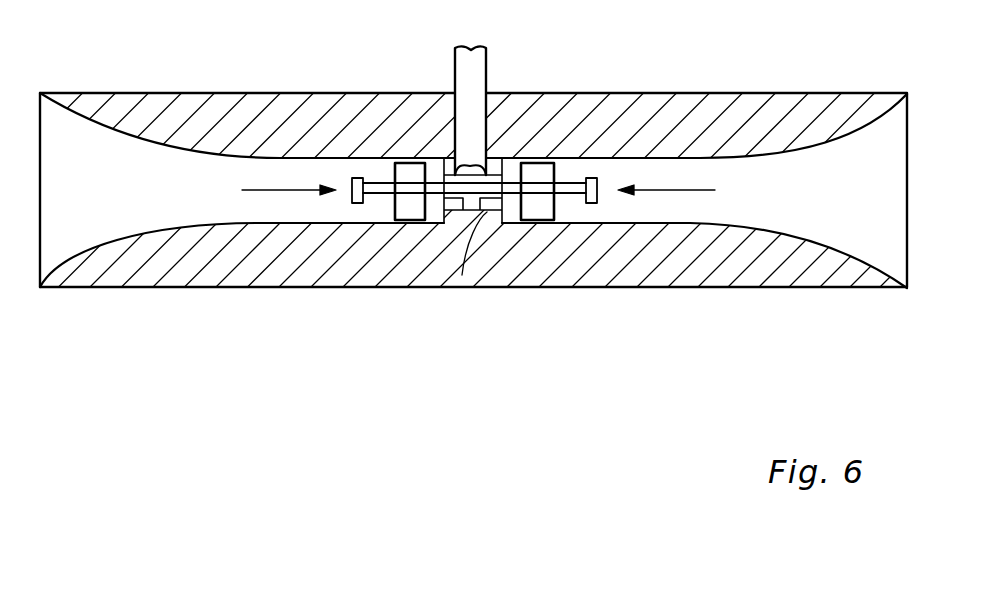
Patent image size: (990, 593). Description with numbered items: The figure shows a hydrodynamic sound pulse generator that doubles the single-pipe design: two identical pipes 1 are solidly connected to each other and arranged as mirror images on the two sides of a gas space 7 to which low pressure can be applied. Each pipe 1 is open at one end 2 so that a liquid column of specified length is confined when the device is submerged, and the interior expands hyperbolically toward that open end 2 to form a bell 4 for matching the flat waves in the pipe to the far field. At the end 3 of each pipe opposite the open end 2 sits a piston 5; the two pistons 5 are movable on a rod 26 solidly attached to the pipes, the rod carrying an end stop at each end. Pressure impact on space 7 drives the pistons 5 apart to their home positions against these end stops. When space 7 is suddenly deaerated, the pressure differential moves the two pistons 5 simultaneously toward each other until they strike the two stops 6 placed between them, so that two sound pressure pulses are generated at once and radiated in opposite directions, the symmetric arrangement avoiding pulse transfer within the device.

The pipe 1 is at (198, 212).
The open end of the pipe 2 is at (907, 118).
The end of the pipe opposite the open end 3 is at (380, 166).
The bell 4 is at (852, 132).
The piston 5 is at (410, 208).
The stop 6 is at (446, 212).
The gas space 7 is at (492, 174).
The rod 26 is at (378, 190).